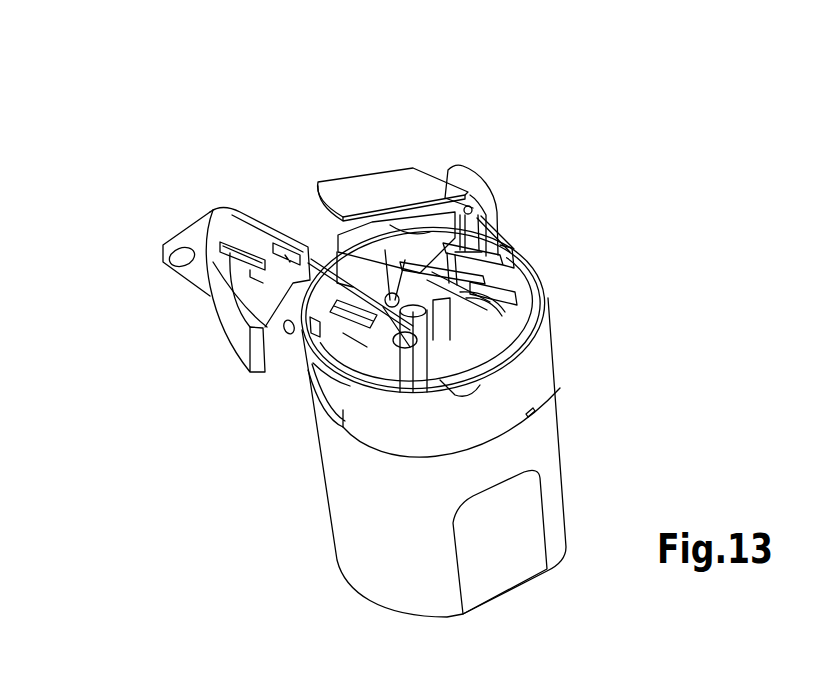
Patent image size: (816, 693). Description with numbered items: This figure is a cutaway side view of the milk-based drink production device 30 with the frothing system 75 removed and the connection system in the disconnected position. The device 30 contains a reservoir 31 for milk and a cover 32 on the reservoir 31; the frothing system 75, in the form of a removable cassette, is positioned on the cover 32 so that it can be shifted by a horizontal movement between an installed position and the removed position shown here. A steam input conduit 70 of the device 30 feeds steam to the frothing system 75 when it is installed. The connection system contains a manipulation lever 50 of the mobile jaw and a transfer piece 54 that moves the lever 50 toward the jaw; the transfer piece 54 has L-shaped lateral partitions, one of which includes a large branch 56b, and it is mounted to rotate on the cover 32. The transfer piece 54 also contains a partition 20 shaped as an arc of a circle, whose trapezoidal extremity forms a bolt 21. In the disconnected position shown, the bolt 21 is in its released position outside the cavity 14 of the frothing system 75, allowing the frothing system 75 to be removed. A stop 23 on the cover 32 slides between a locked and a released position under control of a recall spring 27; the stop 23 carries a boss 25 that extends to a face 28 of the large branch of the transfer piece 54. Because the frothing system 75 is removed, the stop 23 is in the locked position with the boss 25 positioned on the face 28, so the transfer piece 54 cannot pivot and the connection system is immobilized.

The milk-based drink production device 30 is at (131, 103).
The cavity 14 is at (217, 243).
The partition 20 is at (368, 248).
The bolt 21 is at (233, 210).
The stop 23 is at (313, 363).
The boss 25 is at (480, 283).
The recall spring 27 is at (343, 392).
The face 28 is at (412, 280).
The reservoir 31 is at (553, 493).
The cover 32 is at (528, 397).
The manipulation lever 50 is at (373, 183).
The transfer piece 54 is at (480, 227).
The large branch 56b is at (480, 260).
The steam input conduit 70 is at (520, 332).
The frothing system 75 is at (230, 342).